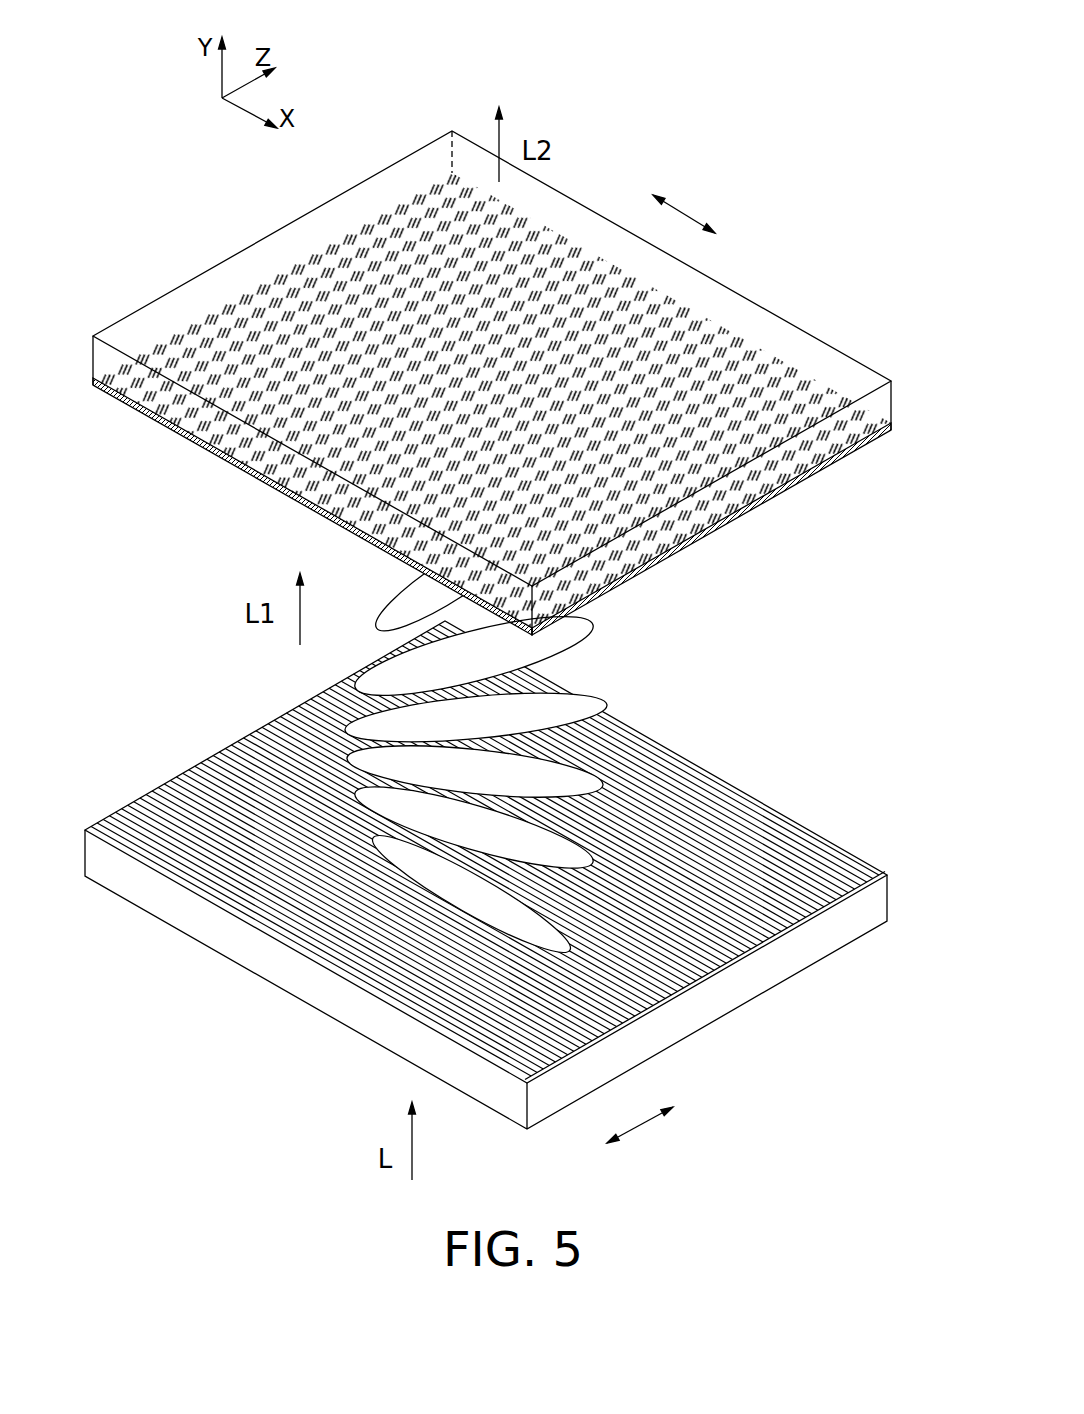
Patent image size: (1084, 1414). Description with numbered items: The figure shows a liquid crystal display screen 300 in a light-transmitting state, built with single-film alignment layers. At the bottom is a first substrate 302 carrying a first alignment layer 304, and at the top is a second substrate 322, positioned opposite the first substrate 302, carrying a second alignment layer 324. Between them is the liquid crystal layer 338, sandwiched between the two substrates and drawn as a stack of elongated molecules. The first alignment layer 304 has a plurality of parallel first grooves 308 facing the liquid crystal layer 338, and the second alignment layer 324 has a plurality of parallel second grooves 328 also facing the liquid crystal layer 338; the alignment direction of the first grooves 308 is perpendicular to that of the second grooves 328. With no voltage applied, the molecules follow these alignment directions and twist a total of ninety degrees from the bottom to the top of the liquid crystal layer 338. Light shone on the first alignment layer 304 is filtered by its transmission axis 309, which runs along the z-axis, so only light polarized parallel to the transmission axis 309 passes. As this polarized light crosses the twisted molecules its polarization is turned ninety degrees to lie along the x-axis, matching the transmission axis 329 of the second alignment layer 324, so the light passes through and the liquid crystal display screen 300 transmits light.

The liquid crystal display screen 300 is at (427, 42).
The first substrate 302 is at (678, 1022).
The first alignment layer 304 is at (887, 875).
The first grooves 308 is at (725, 813).
The transmission axis 309 is at (648, 1131).
The second substrate 322 is at (105, 367).
The second alignment layer 324 is at (186, 440).
The second grooves 328 is at (266, 487).
The transmission axis 329 is at (693, 210).
The liquid crystal layer 338 is at (567, 628).